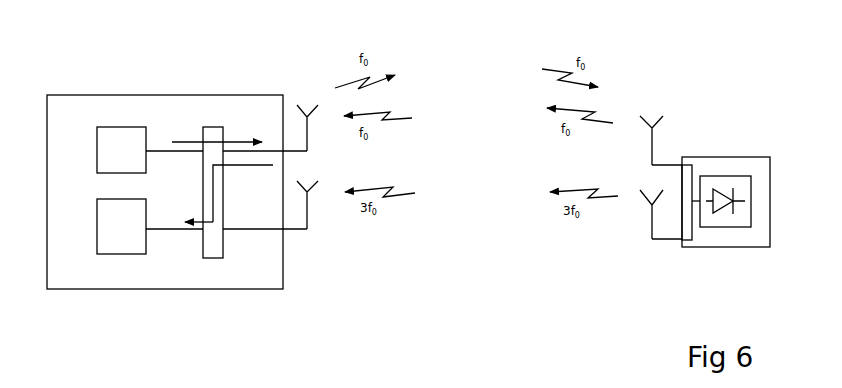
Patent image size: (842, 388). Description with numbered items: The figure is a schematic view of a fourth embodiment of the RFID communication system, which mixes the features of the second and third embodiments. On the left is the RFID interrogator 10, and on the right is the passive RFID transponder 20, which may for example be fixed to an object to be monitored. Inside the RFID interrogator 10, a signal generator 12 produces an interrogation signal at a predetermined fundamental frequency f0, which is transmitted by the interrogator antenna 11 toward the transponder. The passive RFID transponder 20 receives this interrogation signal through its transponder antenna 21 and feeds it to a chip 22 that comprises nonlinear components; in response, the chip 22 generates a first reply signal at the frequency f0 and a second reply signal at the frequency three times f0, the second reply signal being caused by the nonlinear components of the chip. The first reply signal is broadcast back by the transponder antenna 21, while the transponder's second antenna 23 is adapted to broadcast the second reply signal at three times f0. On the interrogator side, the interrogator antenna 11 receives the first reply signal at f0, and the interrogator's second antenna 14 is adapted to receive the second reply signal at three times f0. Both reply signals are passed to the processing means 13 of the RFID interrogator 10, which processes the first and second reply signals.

The RFID interrogator 10 is at (174, 68).
The interrogator antenna 11 is at (291, 58).
The signal generator 12 is at (120, 127).
The processing means 13 is at (120, 254).
The second antenna 14 is at (315, 186).
The passive RFID transponder 20 is at (728, 120).
The transponder antenna 21 is at (652, 128).
The chip 22 is at (728, 227).
The second antenna 23 is at (646, 200).